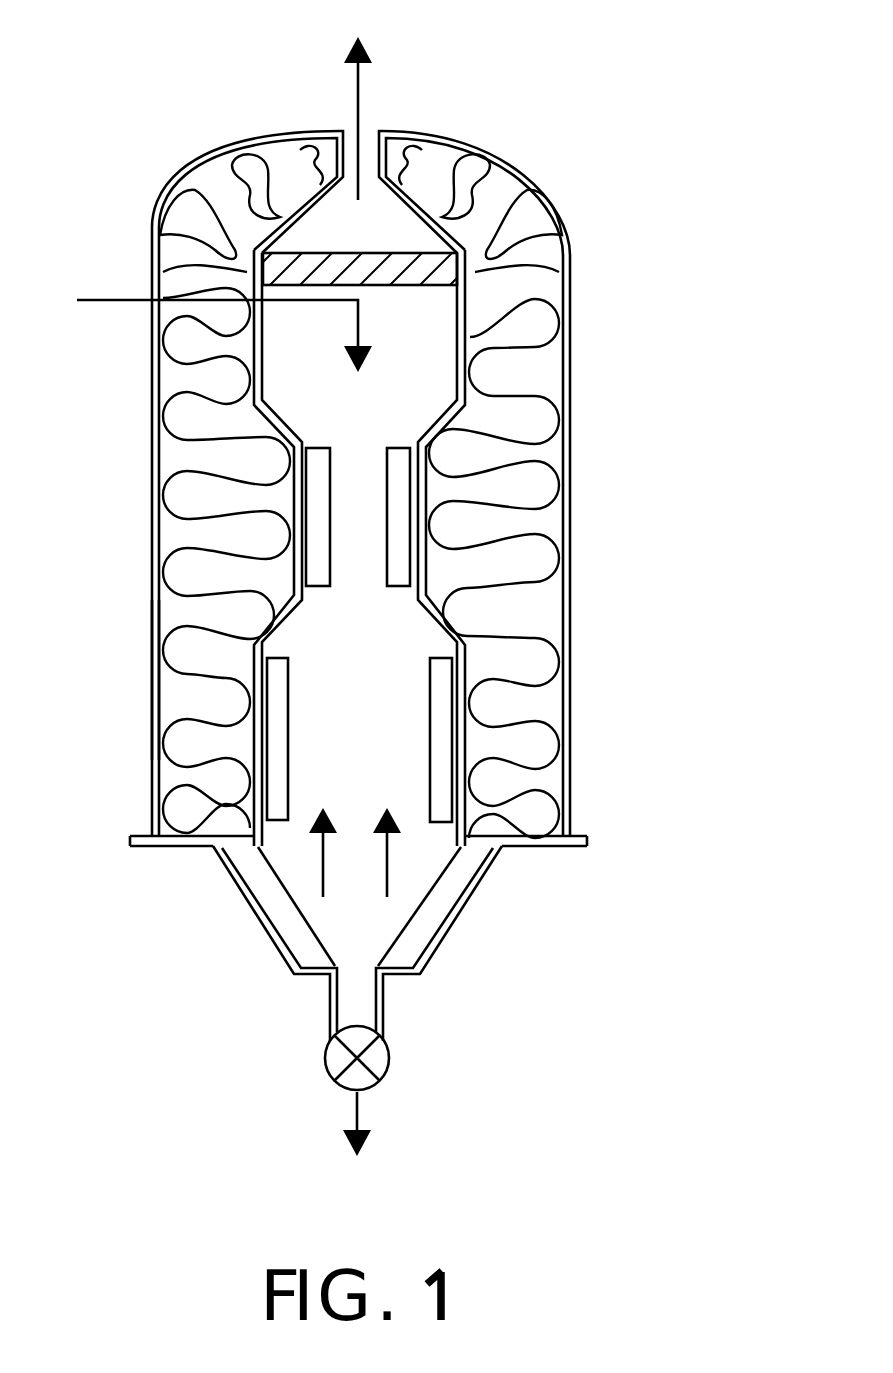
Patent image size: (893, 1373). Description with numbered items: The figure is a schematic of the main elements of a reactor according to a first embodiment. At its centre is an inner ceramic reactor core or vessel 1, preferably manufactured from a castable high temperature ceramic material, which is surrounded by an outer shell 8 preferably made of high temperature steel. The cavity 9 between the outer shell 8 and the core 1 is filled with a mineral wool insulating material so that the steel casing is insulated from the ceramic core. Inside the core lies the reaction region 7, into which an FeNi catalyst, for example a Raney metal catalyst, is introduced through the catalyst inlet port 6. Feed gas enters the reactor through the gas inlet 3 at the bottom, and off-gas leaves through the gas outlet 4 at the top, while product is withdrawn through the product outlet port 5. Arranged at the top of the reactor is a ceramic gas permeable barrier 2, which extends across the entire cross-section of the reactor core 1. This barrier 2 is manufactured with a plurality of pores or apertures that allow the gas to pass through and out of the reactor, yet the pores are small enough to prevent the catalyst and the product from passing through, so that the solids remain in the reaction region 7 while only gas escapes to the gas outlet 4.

The reactor core 1 is at (340, 488).
The gas permeable barrier 2 is at (408, 247).
The gas inlet 3 is at (323, 897).
The gas outlet 4 is at (358, 100).
The product outlet port 5 is at (357, 1146).
The catalyst inlet port 6 is at (112, 302).
The reaction region 7 is at (400, 393).
The outer shell 8 is at (152, 680).
The cavity 9 is at (520, 628).